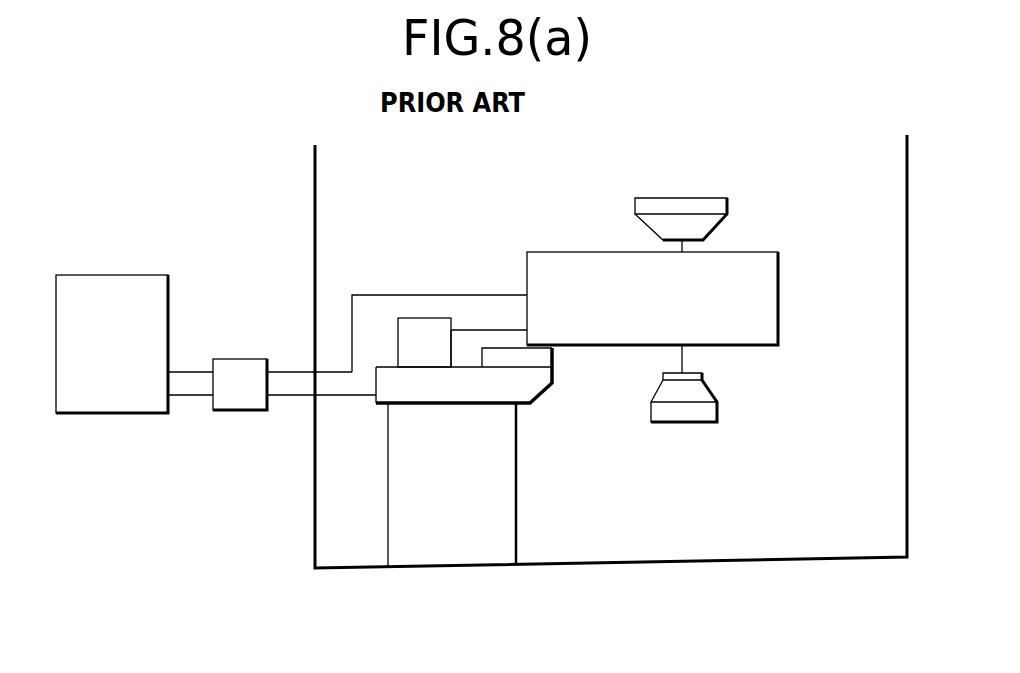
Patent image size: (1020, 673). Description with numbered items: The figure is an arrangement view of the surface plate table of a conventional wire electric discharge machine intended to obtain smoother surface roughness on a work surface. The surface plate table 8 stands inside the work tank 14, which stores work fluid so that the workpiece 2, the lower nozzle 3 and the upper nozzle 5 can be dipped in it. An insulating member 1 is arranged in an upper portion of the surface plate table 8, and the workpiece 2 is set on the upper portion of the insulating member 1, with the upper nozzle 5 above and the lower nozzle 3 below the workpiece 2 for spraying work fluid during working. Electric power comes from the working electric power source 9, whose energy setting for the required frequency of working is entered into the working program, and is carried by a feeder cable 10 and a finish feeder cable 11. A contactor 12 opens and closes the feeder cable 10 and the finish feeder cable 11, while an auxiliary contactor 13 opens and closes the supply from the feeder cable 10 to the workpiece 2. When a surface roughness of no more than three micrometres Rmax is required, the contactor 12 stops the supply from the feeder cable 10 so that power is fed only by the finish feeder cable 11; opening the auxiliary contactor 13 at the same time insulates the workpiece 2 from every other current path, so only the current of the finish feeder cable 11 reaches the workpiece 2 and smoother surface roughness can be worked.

The insulating member 1 is at (535, 357).
The workpiece 2 is at (762, 323).
The lower nozzle 3 is at (664, 414).
The upper nozzle 5 is at (700, 232).
The surface plate table 8 is at (484, 401).
The working electric power source 9 is at (82, 402).
The feeder cable 10 is at (190, 398).
The finish feeder cable 11 is at (195, 368).
The contactor 12 is at (247, 357).
The auxiliary contactor 13 is at (418, 327).
The work tank 14 is at (818, 557).